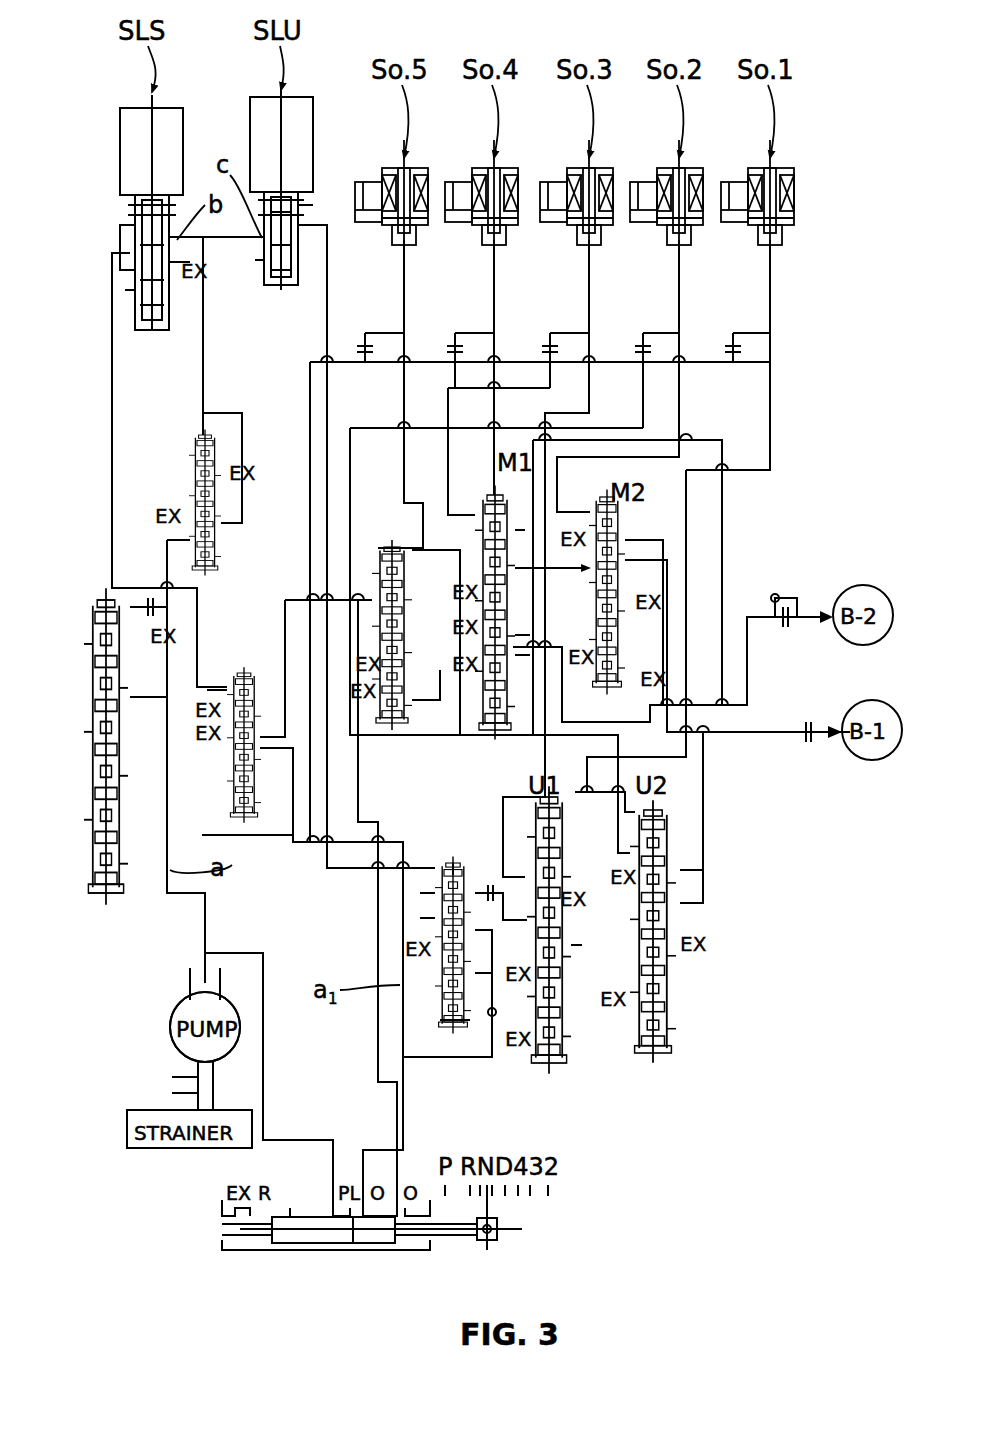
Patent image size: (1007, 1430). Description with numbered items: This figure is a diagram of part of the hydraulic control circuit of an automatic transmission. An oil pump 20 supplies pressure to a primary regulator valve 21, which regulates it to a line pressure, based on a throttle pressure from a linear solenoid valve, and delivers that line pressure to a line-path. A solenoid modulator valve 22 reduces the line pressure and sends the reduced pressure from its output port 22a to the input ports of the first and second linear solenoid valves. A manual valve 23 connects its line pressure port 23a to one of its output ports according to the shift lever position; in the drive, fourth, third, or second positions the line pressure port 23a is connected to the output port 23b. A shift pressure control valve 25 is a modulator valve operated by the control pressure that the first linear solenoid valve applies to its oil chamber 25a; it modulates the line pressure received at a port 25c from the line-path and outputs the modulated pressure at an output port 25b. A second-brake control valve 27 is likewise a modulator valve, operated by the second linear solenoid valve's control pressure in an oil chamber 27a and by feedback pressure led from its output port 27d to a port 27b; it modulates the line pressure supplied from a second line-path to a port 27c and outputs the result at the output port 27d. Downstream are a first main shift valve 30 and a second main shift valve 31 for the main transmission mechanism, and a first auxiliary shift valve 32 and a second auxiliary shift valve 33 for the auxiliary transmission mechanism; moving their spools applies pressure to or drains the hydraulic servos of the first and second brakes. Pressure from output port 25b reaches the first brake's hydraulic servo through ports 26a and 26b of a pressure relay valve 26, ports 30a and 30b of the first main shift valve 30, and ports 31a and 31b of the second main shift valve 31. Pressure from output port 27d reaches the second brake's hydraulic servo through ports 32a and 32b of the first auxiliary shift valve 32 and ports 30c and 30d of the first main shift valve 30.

The oil pump 20 is at (185, 1000).
The primary regulator valve 21 is at (95, 600).
The solenoid modulator valve 22 is at (197, 433).
The output port 22a is at (226, 526).
The manual valve 23 is at (245, 1182).
The line pressure port 23a is at (305, 1212).
The output port 23b is at (356, 1160).
The shift pressure control valve 25 is at (236, 668).
The oil chamber 25a is at (210, 692).
The output port 25b is at (262, 735).
The port 25c is at (249, 852).
The pressure relay valve 26 is at (388, 540).
The port 26a is at (370, 600).
The port 26b is at (437, 696).
The B2 control valve 27 is at (437, 862).
The oil chamber 27a is at (454, 862).
The port 27b is at (432, 893).
The port 27c is at (432, 918).
The output port 27d is at (461, 1038).
The first (M1) shift valve 30 is at (483, 494).
The port 30a is at (474, 553).
The port 30b is at (516, 530).
The port 30c is at (518, 636).
The port 30d is at (515, 655).
The second (M2) shift valve 31 is at (598, 500).
The port 31a is at (586, 568).
The port 31b is at (626, 545).
The first (U1) shift valve 32 is at (527, 800).
The port 32a is at (520, 920).
The port 32b is at (572, 948).
The second (U2) shift valve 33 is at (680, 810).